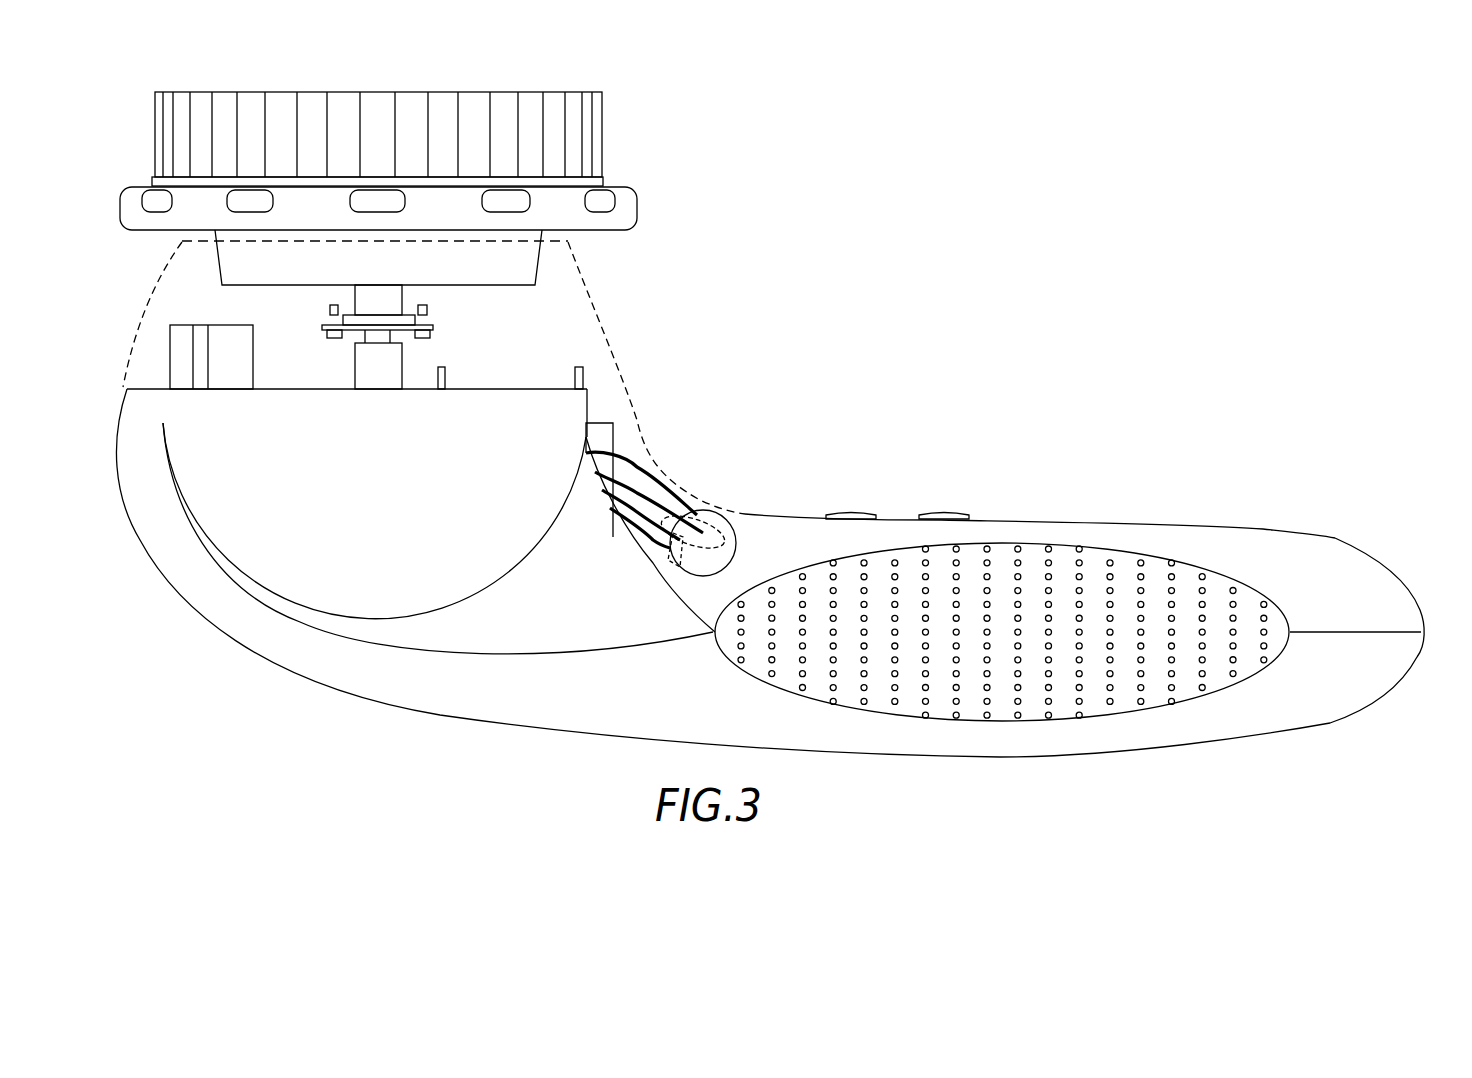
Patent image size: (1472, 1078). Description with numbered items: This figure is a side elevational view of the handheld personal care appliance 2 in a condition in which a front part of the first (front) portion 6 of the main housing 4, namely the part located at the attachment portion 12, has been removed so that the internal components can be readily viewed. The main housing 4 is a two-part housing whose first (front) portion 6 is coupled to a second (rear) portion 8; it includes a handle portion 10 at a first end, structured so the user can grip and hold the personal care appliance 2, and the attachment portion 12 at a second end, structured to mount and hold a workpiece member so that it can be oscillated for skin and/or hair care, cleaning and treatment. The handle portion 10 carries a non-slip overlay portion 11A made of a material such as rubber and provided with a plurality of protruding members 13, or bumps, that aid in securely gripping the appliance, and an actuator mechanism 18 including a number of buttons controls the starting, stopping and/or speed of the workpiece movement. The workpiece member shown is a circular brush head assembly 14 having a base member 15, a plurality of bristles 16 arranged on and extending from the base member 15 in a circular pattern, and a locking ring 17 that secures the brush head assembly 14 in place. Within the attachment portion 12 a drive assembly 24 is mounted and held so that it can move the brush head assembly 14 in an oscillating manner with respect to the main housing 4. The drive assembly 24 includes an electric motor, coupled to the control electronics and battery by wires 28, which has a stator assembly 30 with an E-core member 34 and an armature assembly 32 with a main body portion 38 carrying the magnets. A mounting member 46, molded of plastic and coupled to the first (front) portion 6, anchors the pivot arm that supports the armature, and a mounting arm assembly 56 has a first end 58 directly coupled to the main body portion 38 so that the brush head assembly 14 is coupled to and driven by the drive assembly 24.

The handheld personal care appliance 2 is at (927, 372).
The main housing 4 is at (444, 711).
The first (front) portion 6 is at (1253, 545).
The second (rear) portion 8 is at (1243, 730).
The handle portion 10 is at (1407, 685).
The non-slip overlay portion 11A is at (817, 689).
The attachment portion 12 is at (155, 558).
The protruding members 13 is at (1084, 574).
The brush head assembly 14 is at (147, 176).
The base member 15 is at (604, 179).
The bristles 16 is at (573, 100).
The locking ring 17 is at (637, 206).
The actuator mechanism 18 is at (941, 510).
The drive assembly 24 is at (450, 328).
The wires 28 is at (714, 535).
The stator assembly 30 is at (588, 368).
The armature assembly 32 is at (342, 378).
The E-core member 34 is at (600, 428).
The main body portion 38 is at (398, 380).
The mounting member 46 is at (222, 337).
The mounting arm assembly 56 is at (378, 295).
The first end 58 is at (383, 338).